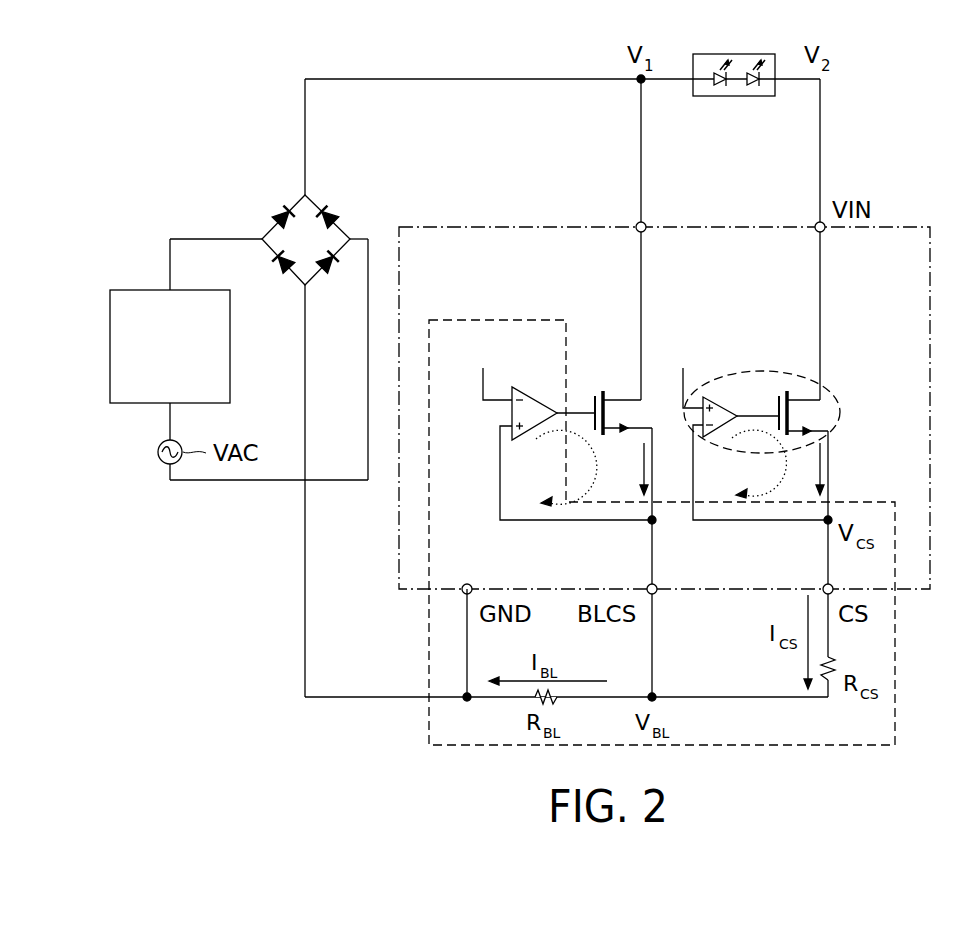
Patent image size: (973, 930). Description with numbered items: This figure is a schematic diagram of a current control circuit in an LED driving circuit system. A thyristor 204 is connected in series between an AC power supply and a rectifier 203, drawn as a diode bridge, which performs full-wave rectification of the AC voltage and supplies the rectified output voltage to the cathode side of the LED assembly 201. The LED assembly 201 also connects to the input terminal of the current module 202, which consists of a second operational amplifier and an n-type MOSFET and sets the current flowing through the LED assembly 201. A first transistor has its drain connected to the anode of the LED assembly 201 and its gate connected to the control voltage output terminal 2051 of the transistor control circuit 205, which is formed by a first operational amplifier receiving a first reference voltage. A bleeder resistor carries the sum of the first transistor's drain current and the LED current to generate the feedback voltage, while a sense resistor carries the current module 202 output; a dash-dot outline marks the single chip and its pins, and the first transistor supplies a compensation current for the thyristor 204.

The LED assembly 201 is at (735, 97).
The current module 202 is at (745, 372).
The rectifier 203 is at (347, 195).
The thyristor 204 is at (170, 346).
The transistor control circuit 205 is at (497, 319).
The control voltage output terminal 2051 is at (575, 411).